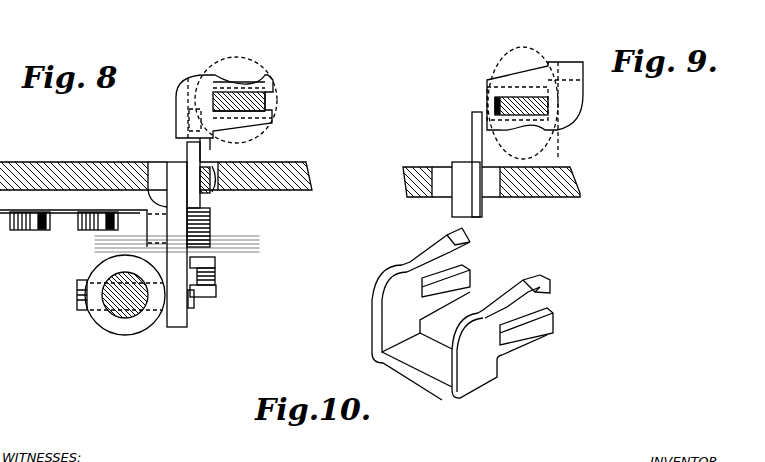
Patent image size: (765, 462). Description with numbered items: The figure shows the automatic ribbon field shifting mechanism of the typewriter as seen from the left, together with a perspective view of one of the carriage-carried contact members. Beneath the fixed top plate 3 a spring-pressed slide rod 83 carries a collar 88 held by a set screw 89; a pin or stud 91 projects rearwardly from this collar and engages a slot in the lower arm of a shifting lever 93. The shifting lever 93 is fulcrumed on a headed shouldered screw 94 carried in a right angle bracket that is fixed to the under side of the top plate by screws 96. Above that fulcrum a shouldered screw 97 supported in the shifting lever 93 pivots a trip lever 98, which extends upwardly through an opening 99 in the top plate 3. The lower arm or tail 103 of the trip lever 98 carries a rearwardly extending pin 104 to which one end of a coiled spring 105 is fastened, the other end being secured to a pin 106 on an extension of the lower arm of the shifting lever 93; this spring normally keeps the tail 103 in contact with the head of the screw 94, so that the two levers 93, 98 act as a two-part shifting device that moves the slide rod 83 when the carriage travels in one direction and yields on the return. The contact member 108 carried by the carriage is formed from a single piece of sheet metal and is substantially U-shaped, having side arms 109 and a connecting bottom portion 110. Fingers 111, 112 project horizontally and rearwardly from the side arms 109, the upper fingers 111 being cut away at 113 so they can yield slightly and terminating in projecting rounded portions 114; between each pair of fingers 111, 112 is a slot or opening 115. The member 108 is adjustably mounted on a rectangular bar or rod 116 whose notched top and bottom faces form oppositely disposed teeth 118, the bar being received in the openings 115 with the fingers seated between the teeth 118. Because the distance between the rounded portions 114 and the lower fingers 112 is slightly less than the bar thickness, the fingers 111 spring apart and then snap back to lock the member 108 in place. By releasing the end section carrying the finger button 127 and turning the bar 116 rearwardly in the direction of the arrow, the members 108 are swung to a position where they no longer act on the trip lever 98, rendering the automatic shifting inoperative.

In FIG. 8, the top plate 3 is at (68, 165).
In FIG. 9, the top plate 3 is at (560, 168).
In FIG. 8, the slide rod 83 is at (115, 310).
In FIG. 8, the collar 88 is at (133, 330).
In FIG. 8, the set screw 89 is at (77, 300).
In FIG. 8, the pin or stud 91 is at (195, 305).
In FIG. 8, the shifting lever 93 is at (208, 232).
In FIG. 9, the shifting lever 93 is at (455, 203).
In FIG. 8, the headed shouldered screw 94 is at (212, 245).
In FIG. 8, the screws 96 is at (46, 226).
In FIG. 8, the shouldered screw 97 is at (207, 200).
In FIG. 8, the trip lever 98 is at (190, 145).
In FIG. 9, the trip lever 98 is at (476, 139).
In FIG. 8, the opening 99 is at (215, 192).
In FIG. 8, the lower arm or tail 103 is at (160, 250).
In FIG. 8, the pin 104 is at (218, 265).
In FIG. 8, the coiled spring 105 is at (217, 276).
In FIG. 8, the pin 106 is at (218, 290).
In FIG. 8, the shifting or contact member 108 is at (180, 115).
In FIG. 9, the shifting or contact member 108 is at (577, 98).
In FIG. 10, the shifting or contact member 108 is at (523, 378).
In FIG. 10, the side arms 109 is at (372, 314).
In FIG. 9, the connecting bottom portion 110 is at (572, 70).
In FIG. 10, the connecting bottom portion 110 is at (408, 360).
In FIG. 8, the fingers 111 is at (273, 79).
In FIG. 9, the fingers 111 is at (472, 126).
In FIG. 10, the fingers 111 is at (470, 236).
In FIG. 8, the fingers 112 is at (273, 121).
In FIG. 9, the fingers 112 is at (490, 93).
In FIG. 10, the fingers 112 is at (470, 276).
In FIG. 8, the cut away 113 is at (232, 80).
In FIG. 10, the cut away 113 is at (428, 258).
In FIG. 8, the projecting rounded portion 114 is at (268, 98).
In FIG. 9, the projecting rounded portion 114 is at (492, 106).
In FIG. 10, the projecting rounded portion 114 is at (472, 248).
In FIG. 8, the slot or opening 115 is at (270, 104).
In FIG. 9, the slot or opening 115 is at (493, 97).
In FIG. 10, the slot or opening 115 is at (408, 265).
In FIG. 8, the bar or rod 116 is at (268, 108).
In FIG. 9, the bar or rod 116 is at (503, 100).
In FIG. 8, the teeth 118 is at (228, 128).
In FIG. 9, the teeth 118 is at (522, 130).
In FIG. 8, the finger button 127 is at (260, 55).
In FIG. 9, the finger button 127 is at (527, 47).